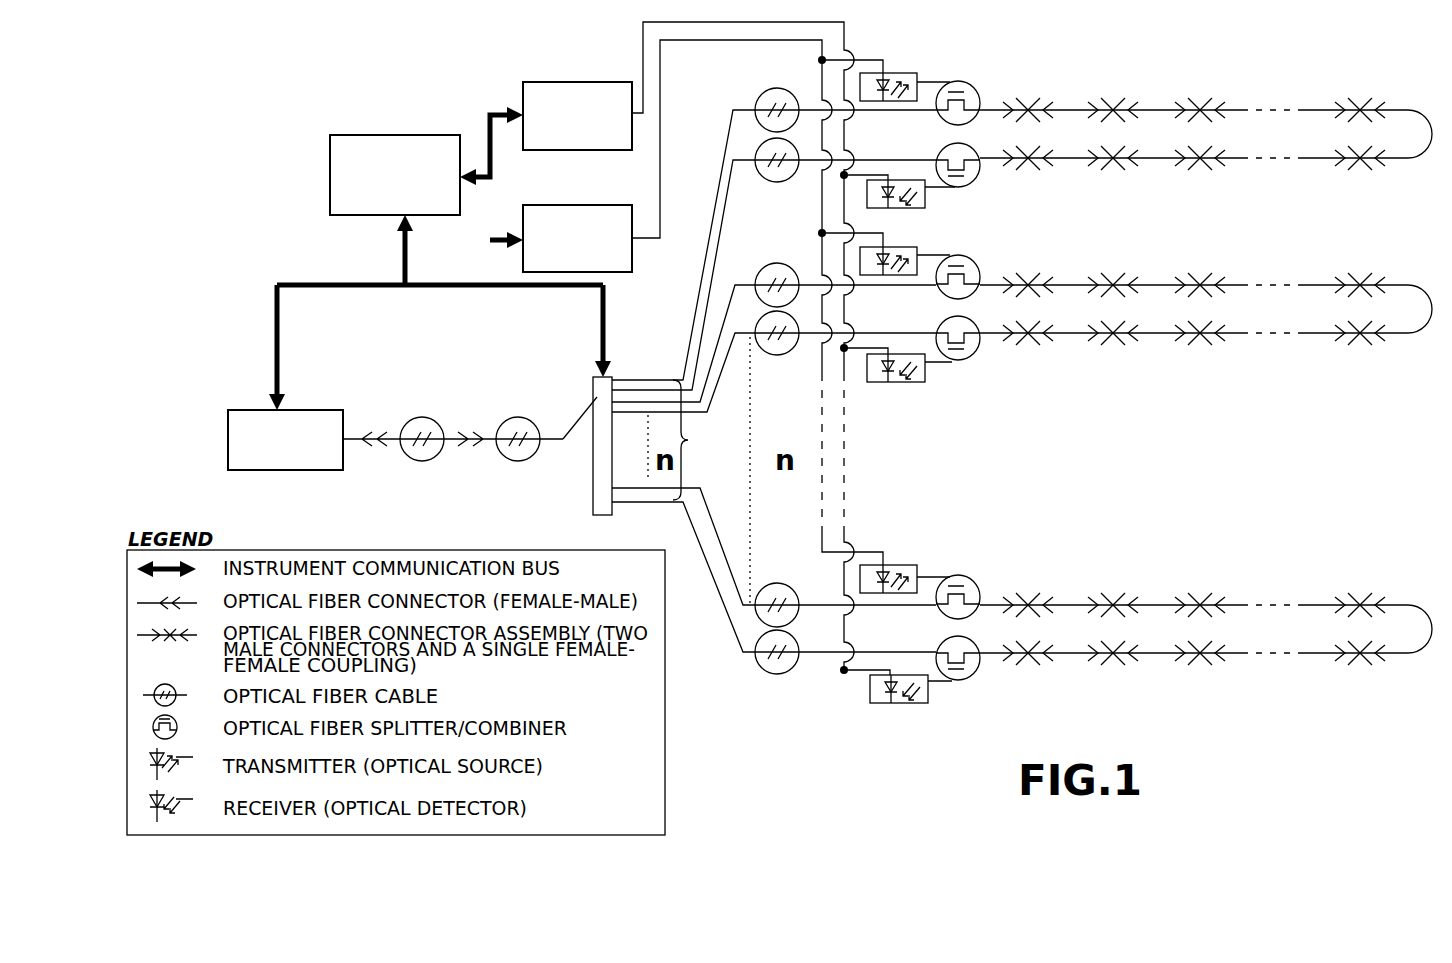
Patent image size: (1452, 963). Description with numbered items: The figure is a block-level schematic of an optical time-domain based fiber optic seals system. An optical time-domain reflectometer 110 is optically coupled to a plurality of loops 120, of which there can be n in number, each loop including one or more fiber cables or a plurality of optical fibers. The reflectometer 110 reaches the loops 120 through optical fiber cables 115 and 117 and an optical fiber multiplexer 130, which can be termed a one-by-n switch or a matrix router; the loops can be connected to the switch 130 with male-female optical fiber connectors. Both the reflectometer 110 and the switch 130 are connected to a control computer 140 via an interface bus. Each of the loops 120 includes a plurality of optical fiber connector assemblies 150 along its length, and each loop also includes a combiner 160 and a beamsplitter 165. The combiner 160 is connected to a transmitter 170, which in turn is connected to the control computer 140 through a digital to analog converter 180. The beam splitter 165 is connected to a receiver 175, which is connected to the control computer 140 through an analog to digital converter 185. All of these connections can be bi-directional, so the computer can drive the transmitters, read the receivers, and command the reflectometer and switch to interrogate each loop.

The optical time-domain reflectometer 110 is at (315, 410).
The optical fiber cable 115 is at (432, 418).
The optical fiber cable 117 is at (530, 418).
The loops 120 is at (774, 381).
The optical fiber multiplexer 130 is at (582, 466).
The control computer 140 is at (410, 135).
The optical fiber connector assemblies 150 is at (1125, 90).
The combiner 160 is at (973, 84).
The beamsplitter 165 is at (957, 187).
The transmitter 170 is at (897, 73).
The receiver 175 is at (895, 180).
The digital to analog converter 180 is at (574, 205).
The analog to digital converter 185 is at (574, 82).